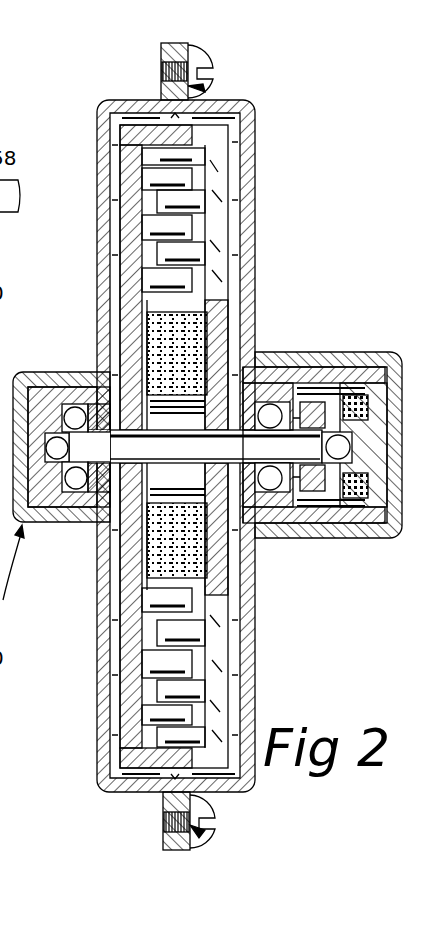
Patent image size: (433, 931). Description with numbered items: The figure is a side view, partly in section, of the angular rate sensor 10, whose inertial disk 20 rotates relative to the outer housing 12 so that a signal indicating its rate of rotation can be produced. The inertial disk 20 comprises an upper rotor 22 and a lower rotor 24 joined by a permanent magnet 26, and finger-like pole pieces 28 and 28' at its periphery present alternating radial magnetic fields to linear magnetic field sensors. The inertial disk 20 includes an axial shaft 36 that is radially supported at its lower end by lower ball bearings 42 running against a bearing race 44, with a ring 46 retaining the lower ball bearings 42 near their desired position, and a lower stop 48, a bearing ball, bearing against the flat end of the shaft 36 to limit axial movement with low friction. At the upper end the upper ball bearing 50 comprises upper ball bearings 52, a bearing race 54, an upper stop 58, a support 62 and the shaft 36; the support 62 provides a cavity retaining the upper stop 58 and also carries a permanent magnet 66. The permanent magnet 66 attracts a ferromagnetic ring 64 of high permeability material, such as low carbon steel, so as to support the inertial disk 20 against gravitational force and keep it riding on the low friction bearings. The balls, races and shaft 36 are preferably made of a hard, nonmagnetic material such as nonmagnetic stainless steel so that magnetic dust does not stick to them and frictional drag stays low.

The angular rate sensor 10 is at (270, 105).
The outer housing 12 is at (68, 372).
The inertial disk 20 is at (157, 797).
The upper rotor 22 is at (222, 152).
The lower rotor 24 is at (128, 663).
The permanent magnet 26 is at (188, 345).
The pole piece 28 is at (182, 439).
The pole piece 28' is at (121, 446).
The axial shaft 36 is at (236, 465).
The lower ball bearings 42 is at (90, 492).
The bearing race 44 is at (72, 490).
The ring 46 is at (98, 372).
The lower stop 48 is at (57, 437).
The upper ball bearing 50 is at (336, 538).
The upper ball bearings 52 is at (273, 492).
The bearing race 54 is at (256, 505).
The upper stop 58 is at (334, 433).
The support 62 is at (366, 372).
The ferromagnetic ring 64 is at (310, 523).
The permanent magnet 66 is at (348, 395).